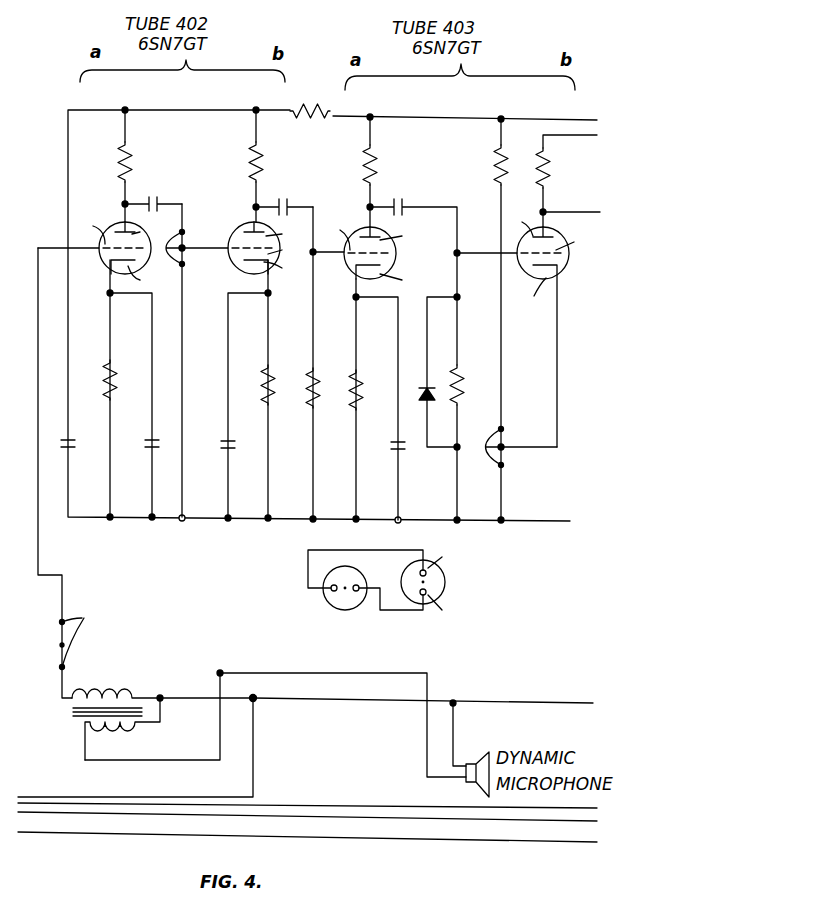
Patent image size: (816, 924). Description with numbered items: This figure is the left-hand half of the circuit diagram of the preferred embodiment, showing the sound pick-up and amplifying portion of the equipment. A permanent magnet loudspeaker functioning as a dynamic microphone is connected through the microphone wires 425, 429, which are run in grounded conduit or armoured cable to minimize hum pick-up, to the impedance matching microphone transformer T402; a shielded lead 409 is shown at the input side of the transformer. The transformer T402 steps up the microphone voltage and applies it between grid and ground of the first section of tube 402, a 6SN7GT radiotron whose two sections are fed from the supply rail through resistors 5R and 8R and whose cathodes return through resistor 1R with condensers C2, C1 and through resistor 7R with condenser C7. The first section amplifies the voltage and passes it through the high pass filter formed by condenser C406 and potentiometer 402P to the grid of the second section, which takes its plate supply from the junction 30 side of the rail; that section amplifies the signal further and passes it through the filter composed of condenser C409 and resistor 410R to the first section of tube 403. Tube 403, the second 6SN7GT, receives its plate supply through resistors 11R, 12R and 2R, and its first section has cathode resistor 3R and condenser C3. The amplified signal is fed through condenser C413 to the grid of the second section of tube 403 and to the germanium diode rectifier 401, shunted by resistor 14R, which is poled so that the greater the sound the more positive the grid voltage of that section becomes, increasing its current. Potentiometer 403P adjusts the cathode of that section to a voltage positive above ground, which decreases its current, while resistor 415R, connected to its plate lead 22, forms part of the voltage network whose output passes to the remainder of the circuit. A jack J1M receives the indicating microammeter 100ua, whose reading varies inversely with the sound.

The tube 402 is at (179, 313).
The tube 403 is at (461, 318).
The resistor 5R is at (133, 160).
The resistor 8R is at (264, 152).
The resistor 11R is at (332, 108).
The resistor 12R is at (378, 160).
The resistor 2R is at (494, 165).
The resistor 415R is at (551, 165).
The resistor 1R is at (118, 372).
The resistor 7R is at (260, 375).
The resistor 410R is at (305, 400).
The resistor 3R is at (367, 399).
The resistor 14R is at (465, 378).
The condenser C406 is at (160, 194).
The condenser C409 is at (290, 196).
The condenser C413 is at (408, 200).
The capacitor C1 is at (150, 446).
The capacitor C2 is at (70, 446).
The capacitor C7 is at (226, 448).
The capacitor C3 is at (406, 450).
The junction 30 is at (122, 204).
The lead 22 is at (546, 210).
The potentiometer 402P is at (184, 240).
The potentiometer 403P is at (500, 455).
The germanium diode rectifier 401 is at (420, 390).
The meter jack J1M is at (438, 584).
The 100 microampere meter 100ua is at (364, 594).
The shielded lead 409 is at (92, 637).
The microphone wire 429 is at (218, 670).
The impedance matching microphone transformer T402 is at (136, 690).
The microphone wire 425 is at (256, 702).